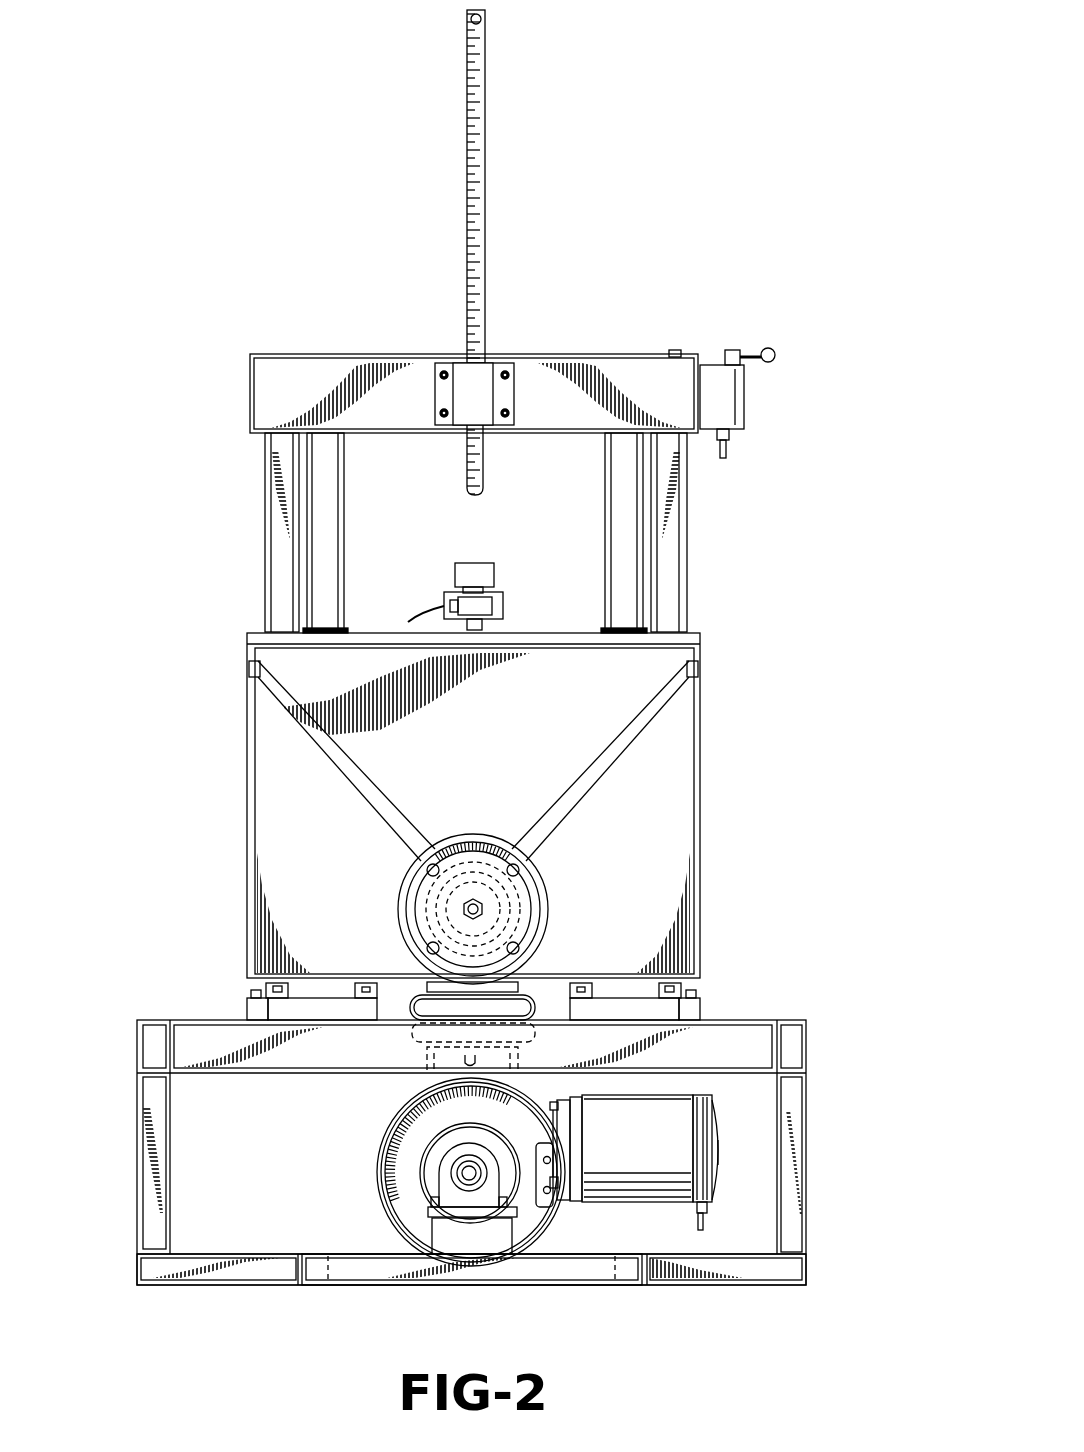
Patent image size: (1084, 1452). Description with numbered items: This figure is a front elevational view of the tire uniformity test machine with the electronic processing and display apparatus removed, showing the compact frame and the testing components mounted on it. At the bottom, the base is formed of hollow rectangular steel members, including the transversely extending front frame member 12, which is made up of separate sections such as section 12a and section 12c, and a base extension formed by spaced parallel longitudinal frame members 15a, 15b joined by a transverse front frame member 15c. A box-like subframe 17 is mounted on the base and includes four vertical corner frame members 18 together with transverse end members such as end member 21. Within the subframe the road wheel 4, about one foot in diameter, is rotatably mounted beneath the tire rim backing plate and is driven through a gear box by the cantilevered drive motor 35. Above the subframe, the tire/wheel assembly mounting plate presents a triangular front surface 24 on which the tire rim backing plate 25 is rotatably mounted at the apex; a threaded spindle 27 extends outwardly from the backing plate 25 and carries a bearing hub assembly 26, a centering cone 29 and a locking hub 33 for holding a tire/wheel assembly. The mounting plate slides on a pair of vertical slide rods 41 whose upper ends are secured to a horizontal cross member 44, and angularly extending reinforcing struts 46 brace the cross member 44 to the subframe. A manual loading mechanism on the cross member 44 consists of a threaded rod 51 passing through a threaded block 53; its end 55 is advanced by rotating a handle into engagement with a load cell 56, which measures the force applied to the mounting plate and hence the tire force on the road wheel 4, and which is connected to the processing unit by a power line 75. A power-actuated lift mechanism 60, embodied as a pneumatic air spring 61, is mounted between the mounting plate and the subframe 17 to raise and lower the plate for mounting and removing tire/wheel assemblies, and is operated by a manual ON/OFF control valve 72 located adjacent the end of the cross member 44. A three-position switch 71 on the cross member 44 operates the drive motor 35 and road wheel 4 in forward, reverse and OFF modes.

The threaded rod 51 is at (486, 109).
The horizontal cross member 44 is at (302, 372).
The threaded block 53 is at (485, 378).
The ON/OFF control valve 72 is at (672, 350).
The three-position switch 71 is at (746, 398).
The slide rods 41 is at (313, 514).
The reinforcing struts 46 is at (275, 545).
The end of threaded shaft 55 is at (477, 500).
The power line 75 is at (416, 611).
The load cell 56 is at (503, 606).
The triangular front surface 24 is at (690, 780).
The bearing hub assembly 26 is at (470, 865).
The locking hub 33 is at (522, 895).
The threaded spindle 27 is at (468, 907).
The centering cone 29 is at (457, 915).
The tire rim backing plate 25 is at (548, 907).
The lift mechanism 60 is at (412, 990).
The pneumatic air spring 61 is at (528, 1003).
The end member 21 is at (748, 1040).
The subframe 17 is at (812, 1115).
The road wheel 4 is at (378, 1140).
The drive motor 35 is at (660, 1190).
The corner frame members 18 is at (150, 1222).
The front frame member 12 is at (215, 1285).
The frame member section 12c is at (247, 1273).
The longitudinally extending frame member 15b is at (330, 1267).
The front frame member 15c is at (505, 1273).
The longitudinally extending frame member 15a is at (613, 1268).
The frame member section 12a is at (738, 1273).